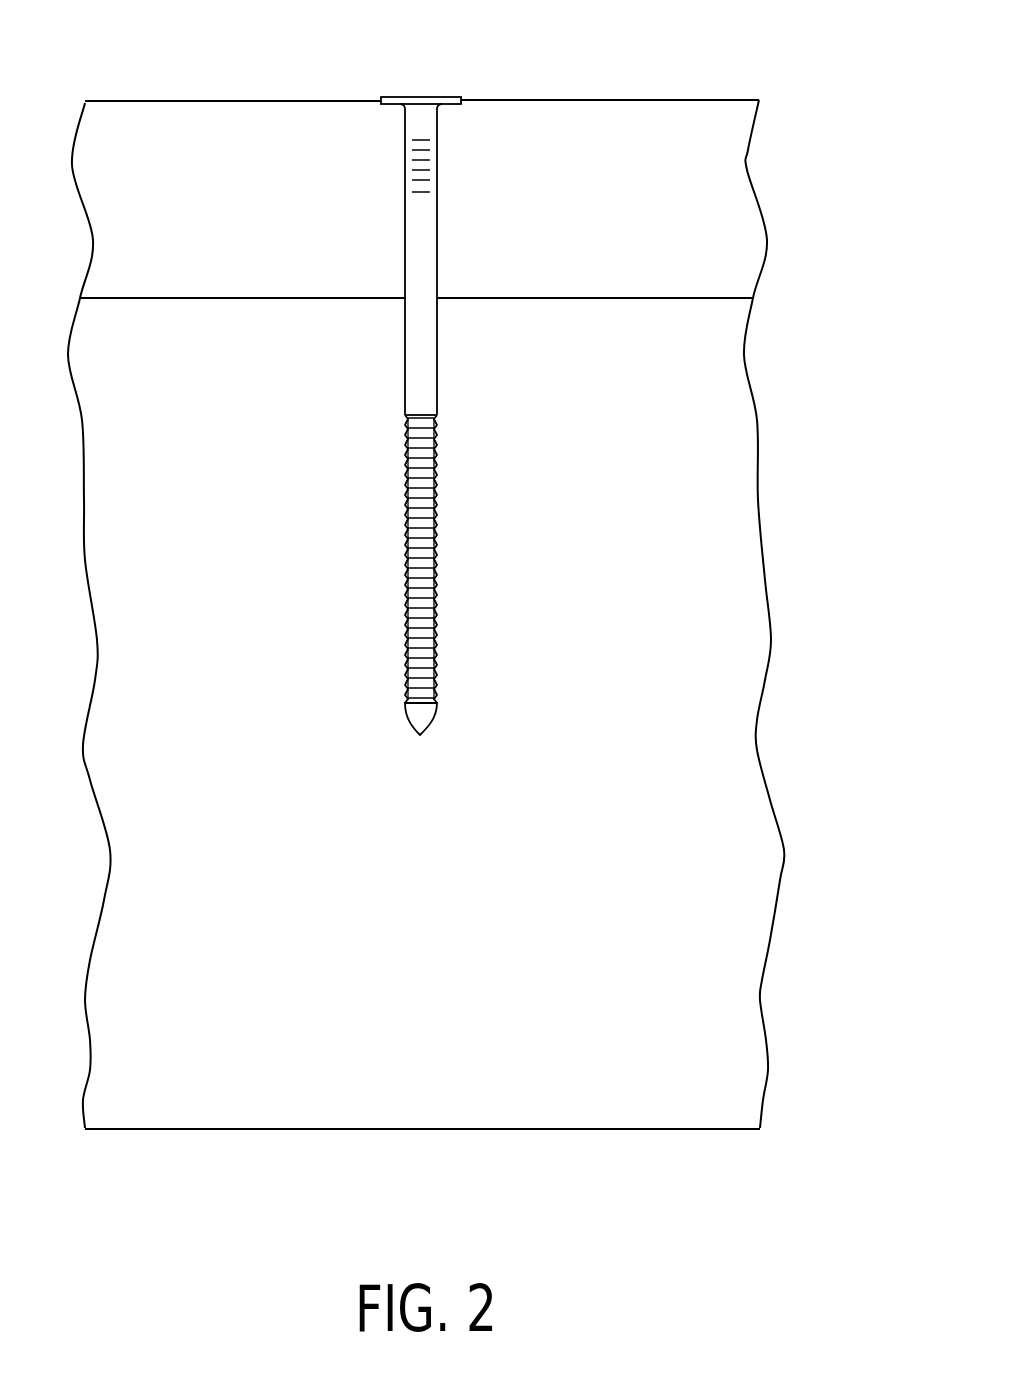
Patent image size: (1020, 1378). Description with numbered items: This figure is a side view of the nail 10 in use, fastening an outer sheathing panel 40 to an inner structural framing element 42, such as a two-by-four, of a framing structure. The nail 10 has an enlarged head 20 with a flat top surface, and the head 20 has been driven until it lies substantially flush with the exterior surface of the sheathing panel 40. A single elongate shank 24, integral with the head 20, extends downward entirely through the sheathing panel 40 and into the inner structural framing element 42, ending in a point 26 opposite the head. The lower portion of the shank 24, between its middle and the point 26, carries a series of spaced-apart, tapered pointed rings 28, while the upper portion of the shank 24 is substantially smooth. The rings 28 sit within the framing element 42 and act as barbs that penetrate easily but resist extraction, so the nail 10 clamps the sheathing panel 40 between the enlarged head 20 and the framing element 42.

The nail 10 is at (480, 415).
The enlarged head 20 is at (437, 97).
The elongate shank 24 is at (437, 388).
The point 26 is at (420, 735).
The pointed rings 28 is at (437, 598).
The sheathing panel 40 is at (672, 99).
The inner structural framing element 42 is at (636, 1130).